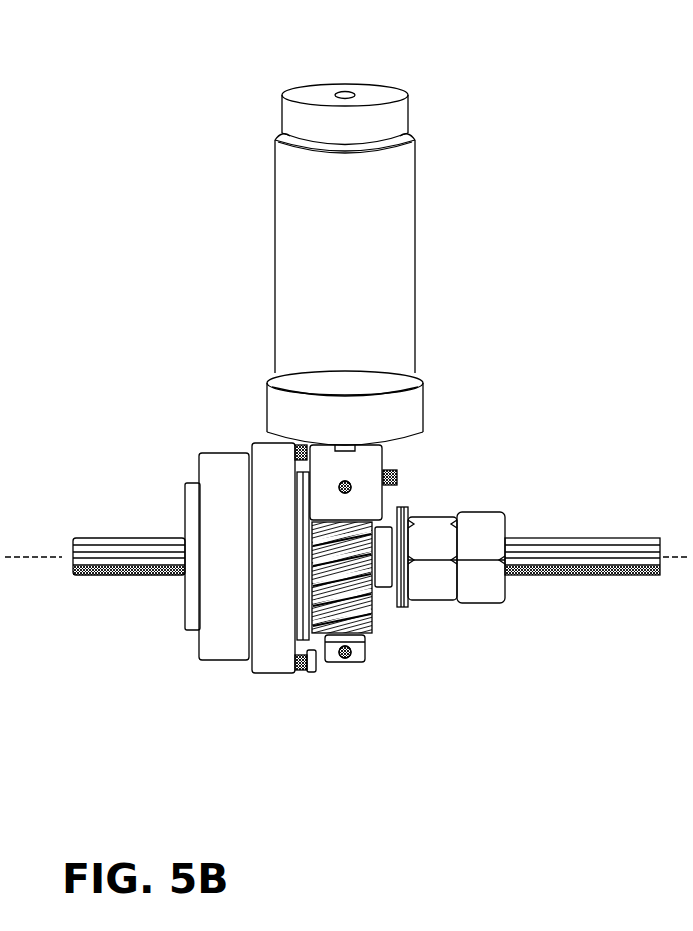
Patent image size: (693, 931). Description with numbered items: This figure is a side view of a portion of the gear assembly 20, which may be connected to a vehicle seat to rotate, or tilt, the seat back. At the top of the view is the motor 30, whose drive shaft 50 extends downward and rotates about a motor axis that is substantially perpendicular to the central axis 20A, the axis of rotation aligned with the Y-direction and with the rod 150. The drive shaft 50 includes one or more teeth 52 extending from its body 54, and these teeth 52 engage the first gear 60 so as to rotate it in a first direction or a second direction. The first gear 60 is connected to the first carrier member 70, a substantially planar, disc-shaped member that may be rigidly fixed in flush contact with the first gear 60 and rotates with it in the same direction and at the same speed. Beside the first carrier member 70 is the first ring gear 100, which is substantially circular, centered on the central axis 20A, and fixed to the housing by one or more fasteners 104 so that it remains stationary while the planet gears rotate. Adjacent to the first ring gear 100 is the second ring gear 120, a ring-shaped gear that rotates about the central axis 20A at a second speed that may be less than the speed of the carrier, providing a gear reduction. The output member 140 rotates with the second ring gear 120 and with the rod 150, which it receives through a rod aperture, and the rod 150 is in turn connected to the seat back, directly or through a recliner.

The gear assembly 20 is at (527, 125).
The central axis 20A is at (688, 558).
The motor 30 is at (423, 193).
The drive shaft 50 is at (377, 613).
The teeth 52 is at (372, 628).
The body 54 is at (345, 660).
The first gear 60 is at (394, 500).
The first carrier member 70 is at (305, 636).
The first ring gear 100 is at (264, 455).
The fasteners 104 is at (313, 672).
The second ring gear 120 is at (220, 466).
The output member 140 is at (189, 634).
The rod 150 is at (580, 545).